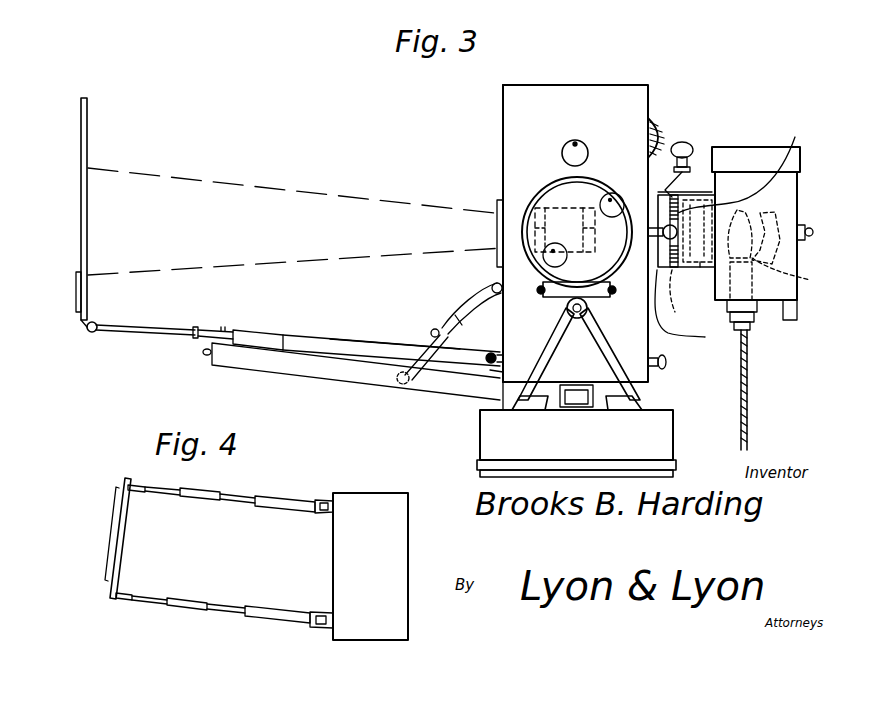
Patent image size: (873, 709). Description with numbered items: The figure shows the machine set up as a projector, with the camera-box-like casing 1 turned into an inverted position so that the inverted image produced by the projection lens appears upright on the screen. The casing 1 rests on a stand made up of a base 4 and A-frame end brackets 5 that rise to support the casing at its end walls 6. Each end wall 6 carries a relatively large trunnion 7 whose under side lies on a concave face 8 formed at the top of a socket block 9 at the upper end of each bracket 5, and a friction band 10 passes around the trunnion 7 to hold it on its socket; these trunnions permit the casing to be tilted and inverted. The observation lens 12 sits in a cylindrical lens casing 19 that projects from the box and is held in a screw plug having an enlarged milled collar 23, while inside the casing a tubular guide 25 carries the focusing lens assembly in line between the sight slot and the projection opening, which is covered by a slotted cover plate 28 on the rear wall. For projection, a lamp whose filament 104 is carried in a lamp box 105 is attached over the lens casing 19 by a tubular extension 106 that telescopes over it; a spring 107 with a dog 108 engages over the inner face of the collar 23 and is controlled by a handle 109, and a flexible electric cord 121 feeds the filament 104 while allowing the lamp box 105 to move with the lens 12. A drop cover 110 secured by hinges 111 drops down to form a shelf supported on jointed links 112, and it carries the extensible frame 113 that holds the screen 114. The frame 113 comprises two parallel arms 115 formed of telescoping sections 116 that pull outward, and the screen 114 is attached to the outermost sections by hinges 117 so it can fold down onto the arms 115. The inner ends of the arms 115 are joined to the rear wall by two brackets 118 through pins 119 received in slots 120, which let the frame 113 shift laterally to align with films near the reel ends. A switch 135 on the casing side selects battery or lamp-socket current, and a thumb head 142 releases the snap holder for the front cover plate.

In FIG. 3, the casing 1 is at (576, 84).
In FIG. 4, the casing 1 is at (376, 503).
In FIG. 3, the base 4 is at (663, 425).
In FIG. 3, the end bracket 5 is at (598, 340).
In FIG. 3, the end wall 6 is at (514, 103).
In FIG. 3, the trunnion 7 is at (611, 265).
In FIG. 3, the concave face 8 is at (590, 262).
In FIG. 3, the block 9 is at (598, 305).
In FIG. 3, the friction band 10 is at (598, 186).
In FIG. 3, the observation lens 12 is at (682, 300).
In FIG. 3, the lens casing 19 is at (691, 306).
In FIG. 3, the milled collar 23 is at (796, 136).
In FIG. 3, the tubular guide 25 is at (550, 190).
In FIG. 3, the slotted cover plate 28 is at (497, 202).
In FIG. 3, the lamp filament 104 is at (781, 255).
In FIG. 3, the lamp box 105 is at (786, 198).
In FIG. 3, the tubular extension 106 is at (700, 270).
In FIG. 3, the spring 107 is at (706, 189).
In FIG. 3, the dog 108 is at (676, 197).
In FIG. 3, the handle 109 is at (684, 143).
In FIG. 3, the drop cover 110 is at (333, 372).
In FIG. 3, the hinge 111 is at (498, 390).
In FIG. 3, the jointed link 112 is at (466, 306).
In FIG. 3, the extensible frame 113 is at (342, 338).
In FIG. 3, the screen 114 is at (88, 220).
In FIG. 4, the screen 114 is at (116, 528).
In FIG. 3, the arm 115 is at (387, 346).
In FIG. 4, the arm 115 is at (262, 605).
In FIG. 3, the telescoping section 116 is at (167, 327).
In FIG. 4, the telescoping section 116 is at (198, 500).
In FIG. 3, the hinge 117 is at (98, 325).
In FIG. 4, the hinge 117 is at (134, 494).
In FIG. 3, the bracket 118 is at (497, 372).
In FIG. 4, the bracket 118 is at (322, 515).
In FIG. 3, the pin 119 is at (491, 353).
In FIG. 3, the slot 120 is at (498, 355).
In FIG. 3, the flexible electric cord 121 is at (750, 372).
In FIG. 3, the switch 135 is at (660, 118).
In FIG. 3, the thumb head 142 is at (668, 361).